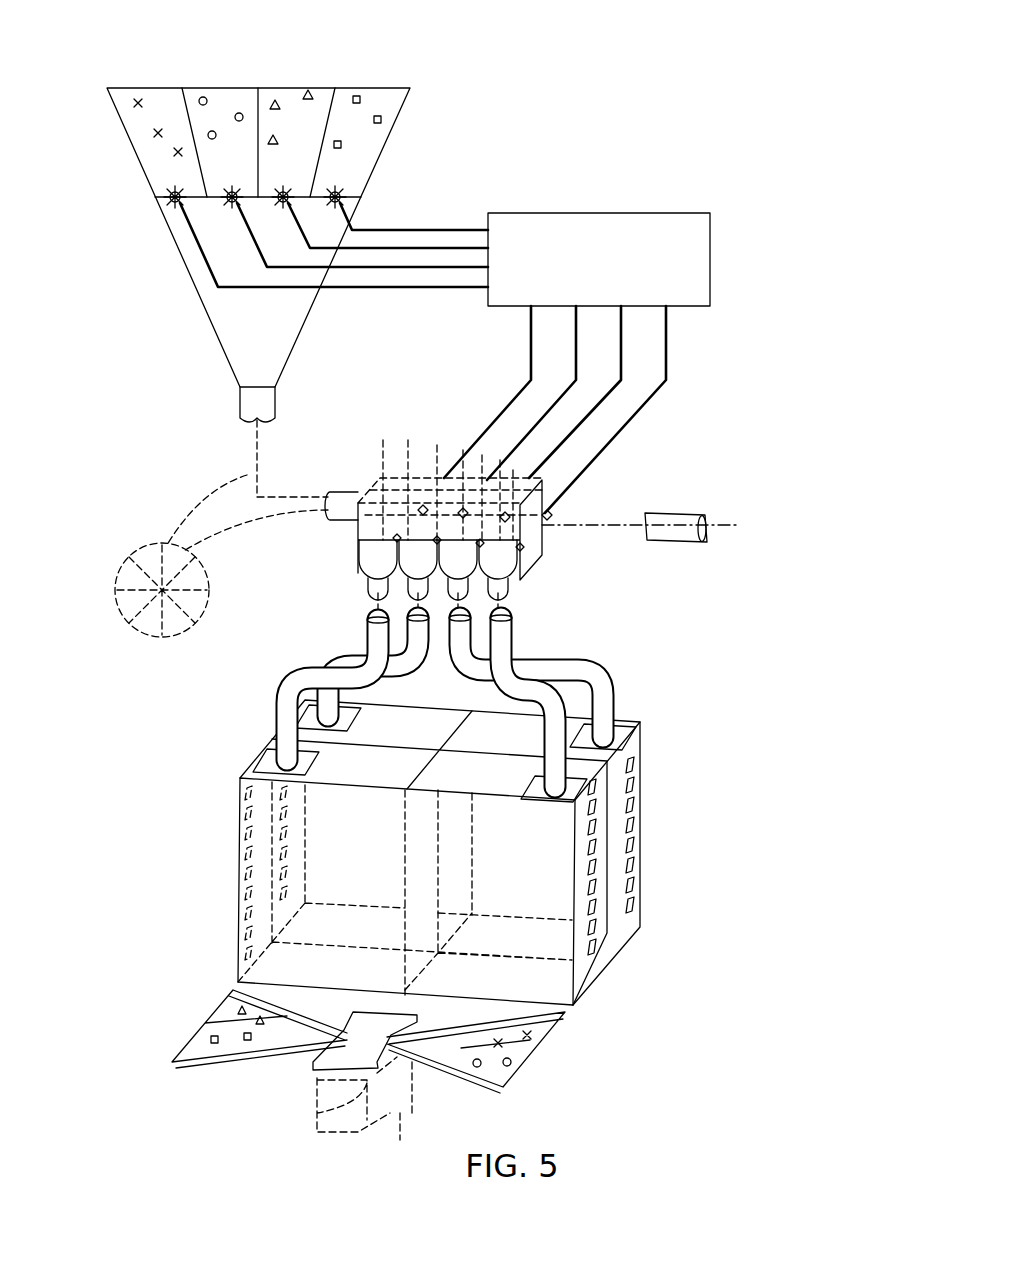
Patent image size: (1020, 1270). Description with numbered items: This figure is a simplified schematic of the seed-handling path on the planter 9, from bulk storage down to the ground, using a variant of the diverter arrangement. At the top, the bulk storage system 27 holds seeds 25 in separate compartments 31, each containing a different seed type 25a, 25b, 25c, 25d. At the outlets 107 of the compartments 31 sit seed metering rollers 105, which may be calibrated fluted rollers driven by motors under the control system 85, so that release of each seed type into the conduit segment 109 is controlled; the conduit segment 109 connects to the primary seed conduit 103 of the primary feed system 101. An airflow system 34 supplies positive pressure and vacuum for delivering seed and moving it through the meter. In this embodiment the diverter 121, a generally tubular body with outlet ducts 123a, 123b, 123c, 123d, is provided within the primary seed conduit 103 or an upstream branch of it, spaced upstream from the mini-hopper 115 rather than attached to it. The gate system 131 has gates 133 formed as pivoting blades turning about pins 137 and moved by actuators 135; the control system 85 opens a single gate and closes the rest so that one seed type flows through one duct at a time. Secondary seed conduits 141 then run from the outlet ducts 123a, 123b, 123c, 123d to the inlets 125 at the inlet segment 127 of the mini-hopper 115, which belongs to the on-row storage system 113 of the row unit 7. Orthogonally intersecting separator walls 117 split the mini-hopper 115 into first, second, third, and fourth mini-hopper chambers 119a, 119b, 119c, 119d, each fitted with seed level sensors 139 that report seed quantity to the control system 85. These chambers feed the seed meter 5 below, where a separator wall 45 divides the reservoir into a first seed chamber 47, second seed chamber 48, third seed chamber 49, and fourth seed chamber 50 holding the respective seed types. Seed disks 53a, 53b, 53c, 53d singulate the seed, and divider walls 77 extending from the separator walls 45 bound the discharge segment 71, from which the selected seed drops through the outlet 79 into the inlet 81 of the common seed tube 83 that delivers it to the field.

The seed meter 5 is at (692, 1091).
The row unit 7 is at (447, 1052).
The planter 9 is at (274, 211).
The seeds 25 is at (244, 98).
The first seed type 25a is at (178, 152).
The second seed type 25b is at (212, 137).
The third seed type 25c is at (307, 95).
The fourth seed type 25d is at (378, 120).
The bulk storage system 27 is at (427, 170).
The compartments 31 is at (172, 80).
The airflow system 34 is at (142, 523).
The separator wall 45 is at (207, 1022).
The first seed chamber 47 is at (540, 1033).
The second seed chamber 48 is at (500, 1067).
The third seed chamber 49 is at (220, 1003).
The fourth seed chamber 50 is at (195, 1040).
The first seed disk 53a is at (518, 1038).
The second seed disk 53b is at (505, 1090).
The third seed disk 53c is at (355, 1003).
The fourth seed disk 53d is at (185, 1062).
The discharge segment 71 is at (383, 1003).
The divider walls 77 is at (465, 1027).
The outlet 79 is at (385, 1078).
The inlet 81 is at (317, 1112).
The seed tube 83 is at (395, 1122).
The control system 85 is at (598, 213).
The primary feed system 101 is at (514, 500).
The primary seed conduit 103 is at (358, 500).
The seed metering rollers 105 is at (168, 205).
The outlets 107 is at (247, 190).
The conduit segment 109 is at (250, 400).
The on-row storage system 113 is at (455, 844).
The mini-hopper 115 is at (655, 805).
The separator walls 117 is at (470, 742).
The first mini-hopper chamber 119a is at (620, 850).
The second mini-hopper chamber 119b is at (580, 872).
The third mini-hopper chamber 119c is at (292, 815).
The fourth mini-hopper chamber 119d is at (245, 825).
The diverter 121 is at (531, 480).
The first outlet duct 123a is at (480, 585).
The second outlet duct 123b is at (470, 592).
The third outlet duct 123c is at (410, 592).
The fourth outlet duct 123d is at (378, 588).
The inlets 125 is at (333, 716).
The inlet segment 127 is at (455, 810).
The gate system 131 is at (466, 522).
The gates 133 is at (580, 532).
The actuators 135 is at (590, 500).
The pins 137 is at (400, 565).
The seed level sensors 139 is at (633, 925).
The secondary seed conduits 141 is at (342, 660).